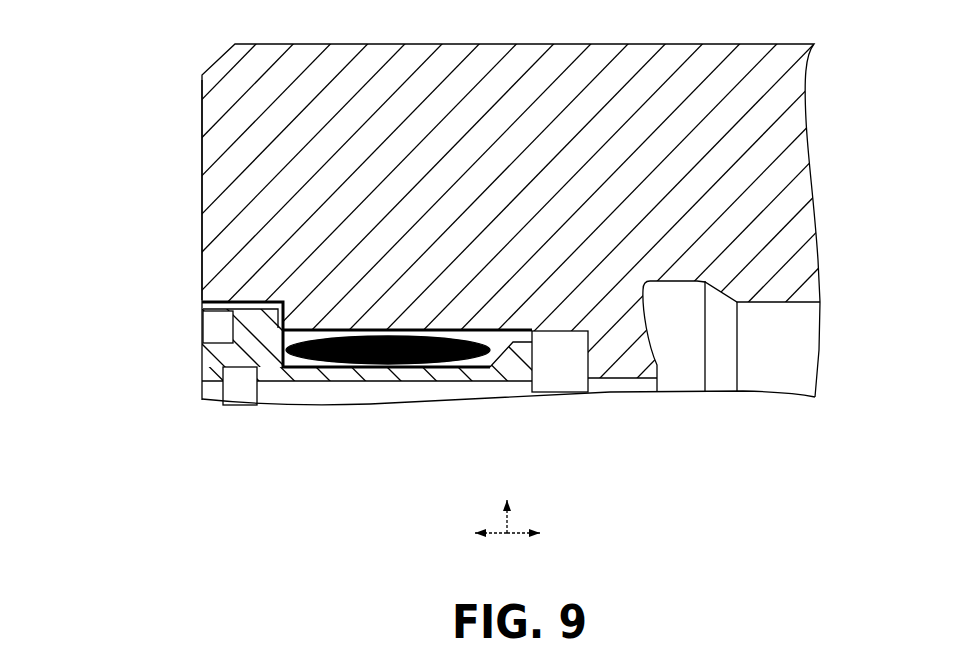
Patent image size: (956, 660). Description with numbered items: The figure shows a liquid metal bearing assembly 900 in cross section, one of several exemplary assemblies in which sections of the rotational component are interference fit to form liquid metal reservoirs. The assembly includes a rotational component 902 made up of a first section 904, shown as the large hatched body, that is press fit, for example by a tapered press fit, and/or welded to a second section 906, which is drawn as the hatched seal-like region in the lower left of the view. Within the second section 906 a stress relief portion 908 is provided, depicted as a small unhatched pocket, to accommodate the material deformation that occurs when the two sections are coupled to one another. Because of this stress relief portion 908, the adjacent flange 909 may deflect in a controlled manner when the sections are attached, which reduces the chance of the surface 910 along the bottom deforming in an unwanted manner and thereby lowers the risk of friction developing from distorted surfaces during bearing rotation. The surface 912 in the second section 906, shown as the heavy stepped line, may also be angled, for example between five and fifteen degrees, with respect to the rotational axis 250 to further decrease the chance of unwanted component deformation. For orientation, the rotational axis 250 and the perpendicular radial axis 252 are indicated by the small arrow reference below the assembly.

The liquid metal bearing assembly 900 is at (105, 60).
The rotational component 902 is at (125, 123).
The first section 904 is at (190, 197).
The second section 906 is at (180, 353).
The stress relief portion 908 is at (203, 327).
The flange 909 is at (202, 307).
The surface 910 is at (370, 382).
The surface 912 is at (243, 303).
The rotational axis 250 is at (529, 536).
The radial axis 252 is at (507, 525).